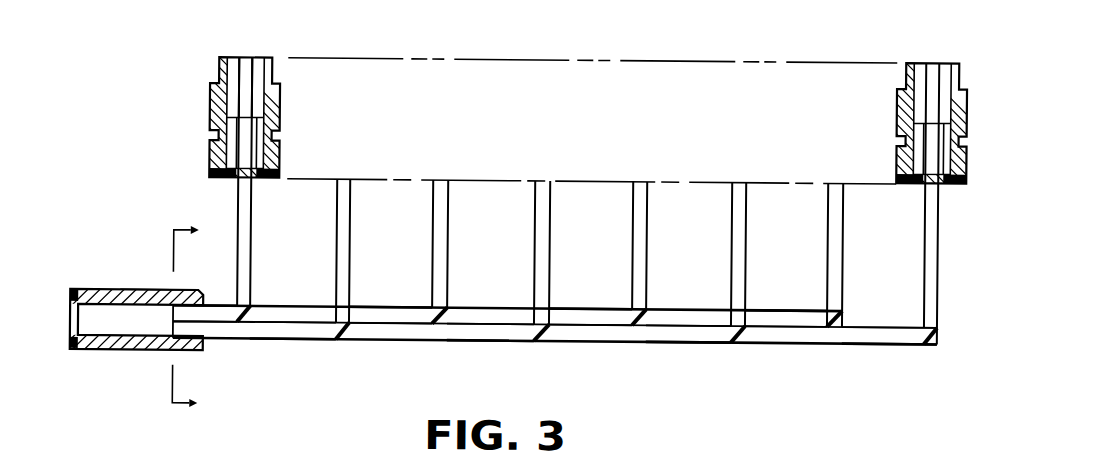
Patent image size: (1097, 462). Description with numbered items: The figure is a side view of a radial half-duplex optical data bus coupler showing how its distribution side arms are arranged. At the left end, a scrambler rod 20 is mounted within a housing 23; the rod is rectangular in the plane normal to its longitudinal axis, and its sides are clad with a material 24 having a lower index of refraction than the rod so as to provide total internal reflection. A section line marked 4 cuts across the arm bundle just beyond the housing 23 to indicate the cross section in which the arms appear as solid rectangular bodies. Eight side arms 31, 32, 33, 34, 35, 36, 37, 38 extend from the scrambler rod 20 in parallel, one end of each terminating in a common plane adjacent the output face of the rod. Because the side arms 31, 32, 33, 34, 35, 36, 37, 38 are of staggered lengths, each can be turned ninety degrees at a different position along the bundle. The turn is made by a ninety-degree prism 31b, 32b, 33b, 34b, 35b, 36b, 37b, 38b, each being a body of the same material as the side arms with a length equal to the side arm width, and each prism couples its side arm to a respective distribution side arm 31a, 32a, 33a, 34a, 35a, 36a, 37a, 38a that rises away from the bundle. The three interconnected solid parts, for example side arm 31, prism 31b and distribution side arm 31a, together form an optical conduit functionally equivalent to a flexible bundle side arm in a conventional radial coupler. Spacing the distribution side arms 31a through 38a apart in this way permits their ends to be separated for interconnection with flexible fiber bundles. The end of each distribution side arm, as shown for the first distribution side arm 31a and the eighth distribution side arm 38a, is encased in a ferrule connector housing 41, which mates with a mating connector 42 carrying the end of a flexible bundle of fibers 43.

The section line 4- 4 is at (194, 316).
The scrambler rod 20 is at (118, 318).
The housing 23 is at (95, 290).
The cladding material 24 is at (150, 292).
The side arm 31 is at (222, 305).
The distribution side arm 31a is at (250, 258).
The 90° prism 31b is at (247, 323).
The side arm 32 is at (309, 335).
The distribution side arm 32a is at (349, 258).
The 90° prism 32b is at (346, 339).
The side arm 33 is at (397, 314).
The distribution side arm 33a is at (447, 258).
The 90° prism 33b is at (442, 324).
The side arm 34 is at (509, 336).
The distribution side arm 34a is at (549, 258).
The 90° prism 34b is at (546, 341).
The side arm 35 is at (594, 314).
The distribution side arm 35a is at (652, 257).
The 90° prism 35b is at (639, 324).
The side arm 36 is at (700, 334).
The distribution side arm 36a is at (752, 258).
The 90° prism 36b is at (738, 341).
The side arm 37 is at (785, 315).
The distribution side arm 37a is at (838, 266).
The 90° prism 37b is at (840, 323).
The side arm 38 is at (901, 335).
The distribution side arm 38a is at (925, 272).
The 90° prism 38b is at (933, 336).
The ferrule connector housing 41 is at (279, 152).
The mating connector 42 is at (273, 63).
The flexible bundle of fibers 43 is at (246, 56).